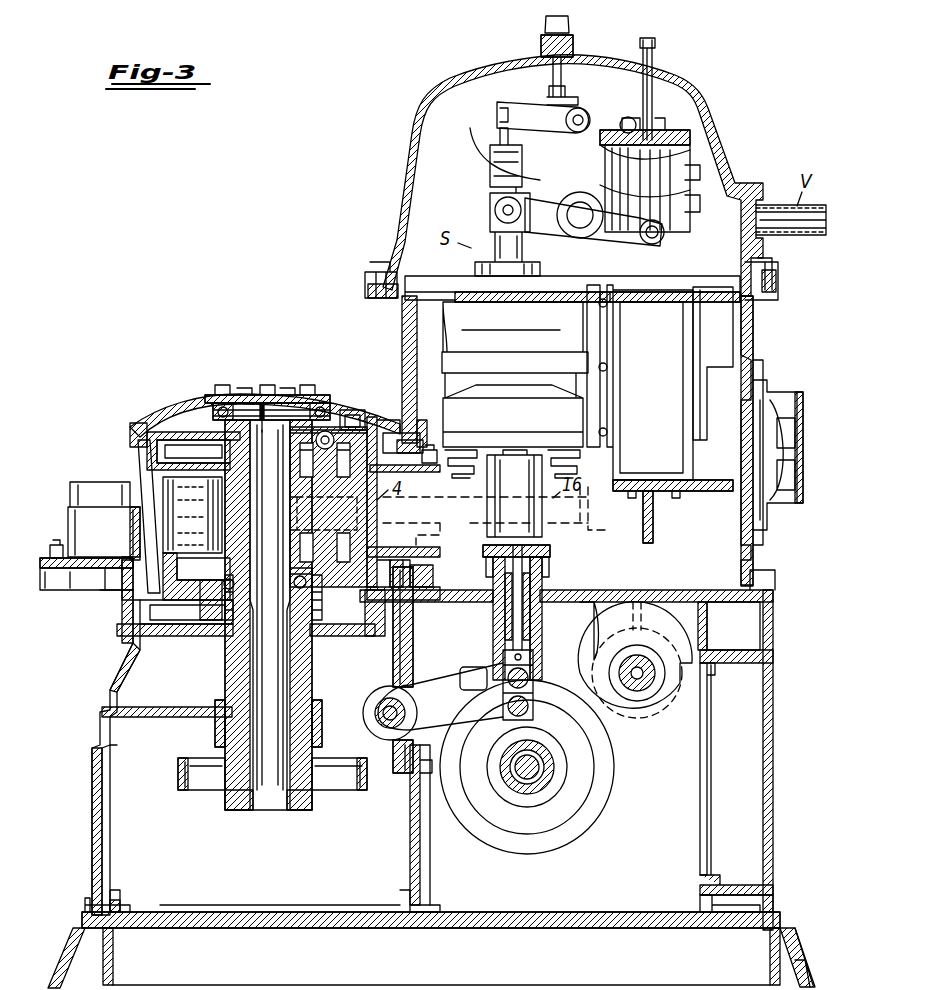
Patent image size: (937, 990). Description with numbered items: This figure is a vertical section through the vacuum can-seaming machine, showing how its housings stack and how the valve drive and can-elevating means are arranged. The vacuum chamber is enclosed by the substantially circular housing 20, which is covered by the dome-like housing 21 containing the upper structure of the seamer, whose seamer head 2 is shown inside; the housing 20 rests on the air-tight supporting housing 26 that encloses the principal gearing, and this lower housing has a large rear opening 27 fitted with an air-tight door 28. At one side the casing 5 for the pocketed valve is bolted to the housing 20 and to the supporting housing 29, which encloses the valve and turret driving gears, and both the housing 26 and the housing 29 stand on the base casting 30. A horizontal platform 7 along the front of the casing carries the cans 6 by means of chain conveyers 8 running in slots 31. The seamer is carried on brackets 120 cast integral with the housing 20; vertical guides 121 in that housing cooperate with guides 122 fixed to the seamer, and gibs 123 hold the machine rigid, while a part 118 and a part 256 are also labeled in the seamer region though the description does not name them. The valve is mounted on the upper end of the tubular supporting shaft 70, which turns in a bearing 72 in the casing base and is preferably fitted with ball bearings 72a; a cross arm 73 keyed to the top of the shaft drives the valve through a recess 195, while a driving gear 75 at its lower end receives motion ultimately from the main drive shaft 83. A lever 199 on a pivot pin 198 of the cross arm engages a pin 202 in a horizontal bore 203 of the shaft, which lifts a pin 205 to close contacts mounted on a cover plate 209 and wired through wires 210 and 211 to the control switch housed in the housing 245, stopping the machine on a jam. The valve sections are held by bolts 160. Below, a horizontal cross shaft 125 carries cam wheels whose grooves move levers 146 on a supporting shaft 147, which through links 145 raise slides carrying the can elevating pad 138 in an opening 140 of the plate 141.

The seamer head 2 is at (515, 374).
The casing 5 is at (142, 458).
The can 6 is at (514, 493).
The horizontal platform 7 is at (57, 545).
The chain conveyer 8 is at (88, 572).
The housing 20 is at (763, 332).
The dome-like housing 21 is at (671, 88).
The supporting housing 26 is at (773, 626).
The opening 27 is at (712, 773).
The door 28 is at (775, 741).
The supporting housing 29 is at (112, 660).
The base casting 30 is at (207, 930).
The slot 31 is at (112, 578).
The tubular supporting shaft 70 is at (243, 640).
The bearing 72 is at (222, 620).
The ball bearing 72a is at (215, 618).
The cross arm 73 is at (214, 437).
The driving gear 75 is at (178, 772).
The main drive shaft 83 is at (645, 685).
The stud 118 is at (460, 476).
The bracket 120 is at (666, 493).
The vertical guide 121 is at (690, 462).
The guide 122 is at (698, 314).
The gib 123 is at (605, 343).
The cross shaft 125 is at (548, 770).
The can elevating pad 138 is at (556, 547).
The opening 140 is at (552, 557).
The plate 141 is at (425, 560).
The link 145 is at (505, 682).
The lever 146 is at (433, 710).
The supporting shaft 147 is at (368, 695).
The bolt 160 is at (355, 418).
The recess 195 is at (205, 432).
The pivot pin 198 is at (352, 410).
The lever 199 is at (325, 408).
The pin 202 is at (303, 398).
The horizontal bore 203 is at (240, 386).
The pin 205 is at (264, 403).
The cover plate 209 is at (235, 392).
The circuit wire 210 is at (272, 386).
The circuit wire 211 is at (245, 385).
The housing 245 is at (790, 404).
The rod 256 is at (652, 52).